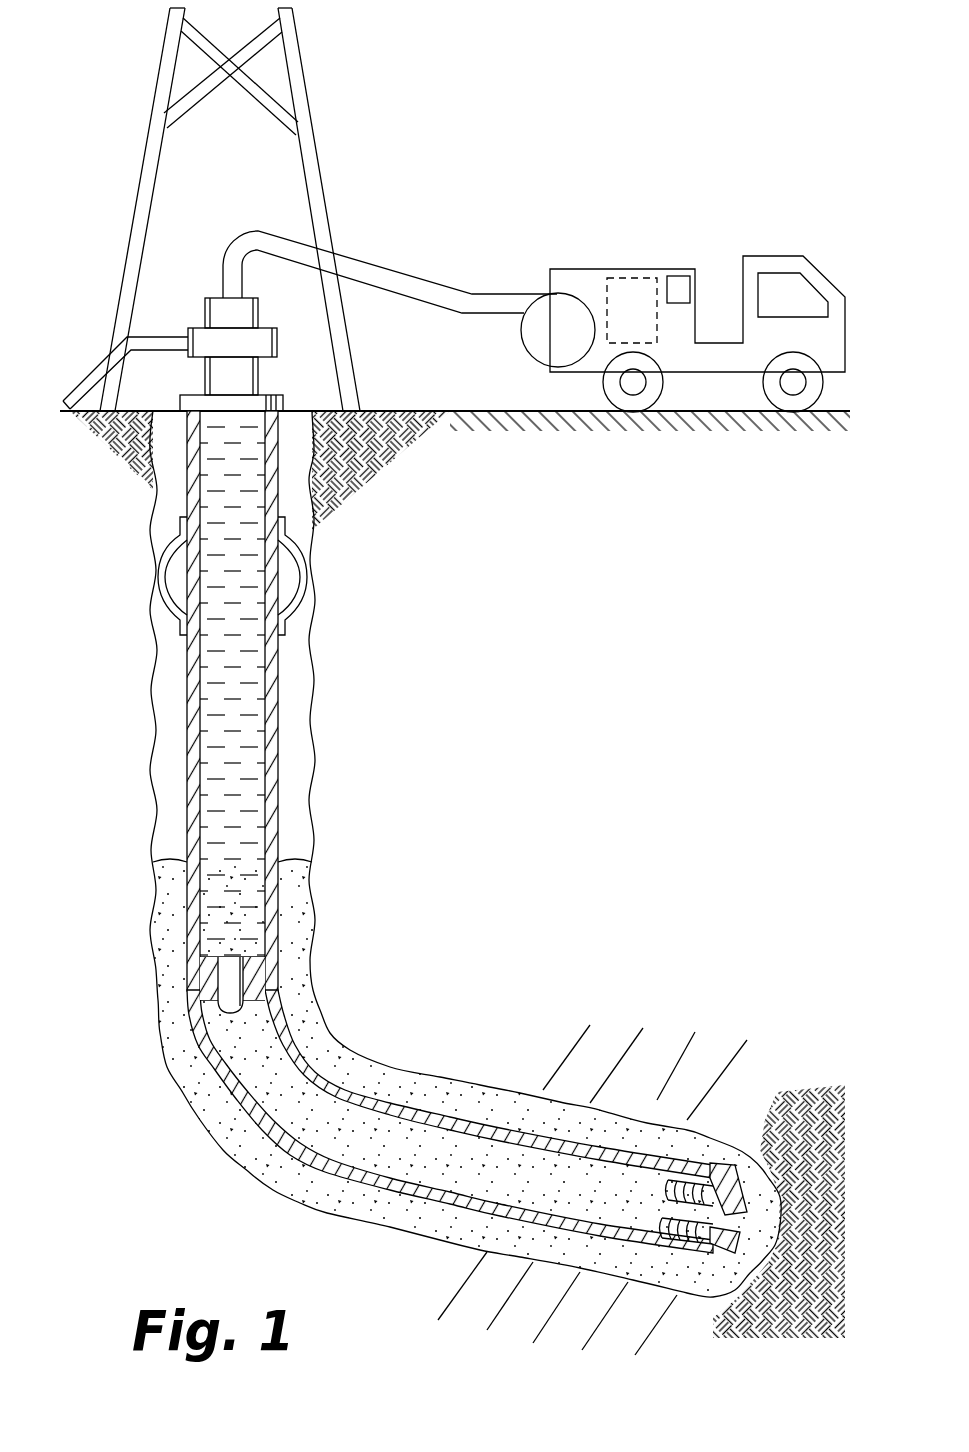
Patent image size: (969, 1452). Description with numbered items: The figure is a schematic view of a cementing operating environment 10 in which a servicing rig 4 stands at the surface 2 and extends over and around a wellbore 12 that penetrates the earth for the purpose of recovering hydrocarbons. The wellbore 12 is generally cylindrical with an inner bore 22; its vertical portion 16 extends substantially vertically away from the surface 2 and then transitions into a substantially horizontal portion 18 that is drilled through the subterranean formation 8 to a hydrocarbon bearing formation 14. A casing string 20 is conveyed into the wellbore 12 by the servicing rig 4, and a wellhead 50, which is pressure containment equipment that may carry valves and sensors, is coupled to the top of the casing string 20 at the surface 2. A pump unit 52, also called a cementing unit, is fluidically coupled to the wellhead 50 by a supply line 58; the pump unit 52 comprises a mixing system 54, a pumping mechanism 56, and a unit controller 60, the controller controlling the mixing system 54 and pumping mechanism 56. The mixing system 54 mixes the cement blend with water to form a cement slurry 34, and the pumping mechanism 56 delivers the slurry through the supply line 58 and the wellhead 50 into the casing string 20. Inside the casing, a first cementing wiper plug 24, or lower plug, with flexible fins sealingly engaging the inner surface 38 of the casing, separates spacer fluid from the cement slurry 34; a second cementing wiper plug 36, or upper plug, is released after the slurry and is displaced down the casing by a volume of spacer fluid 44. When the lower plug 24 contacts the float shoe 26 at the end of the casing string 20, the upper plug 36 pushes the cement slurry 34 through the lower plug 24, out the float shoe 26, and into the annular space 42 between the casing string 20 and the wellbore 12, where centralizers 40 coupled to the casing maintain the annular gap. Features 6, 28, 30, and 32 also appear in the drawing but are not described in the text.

The surface 2 is at (427, 410).
The servicing rig 4 is at (337, 133).
The surface location 6 is at (320, 410).
The subterranean formation 8 is at (400, 743).
The cementing operating environment 10 is at (580, 95).
The wellbore 12 is at (312, 921).
The hydrocarbon bearing formation 14 is at (704, 1089).
The vertical portion 16 is at (104, 778).
The horizontal portion 18 is at (480, 1050).
The casing string 20 is at (185, 828).
The inner bore 22 is at (300, 668).
The first cementing wiper plug 24 is at (665, 1180).
The float shoe 26 is at (723, 1212).
The casing shoe 28 is at (722, 1240).
The toe of wellbore 30 is at (743, 1240).
The rock formation at toe 32 is at (753, 1195).
The cement slurry 34 is at (303, 1122).
The second cementing wiper plug 36 is at (232, 968).
The inner surface 38 is at (240, 796).
The centralizers 40 is at (160, 578).
The annular space 42 is at (173, 712).
The spacer fluid 44 is at (215, 653).
The wellhead 50 is at (203, 313).
The pump unit 52 is at (712, 226).
The mixing system 54 is at (630, 292).
The pumping mechanism 56 is at (569, 338).
The supply line 58 is at (388, 268).
The unit controller 60 is at (682, 282).